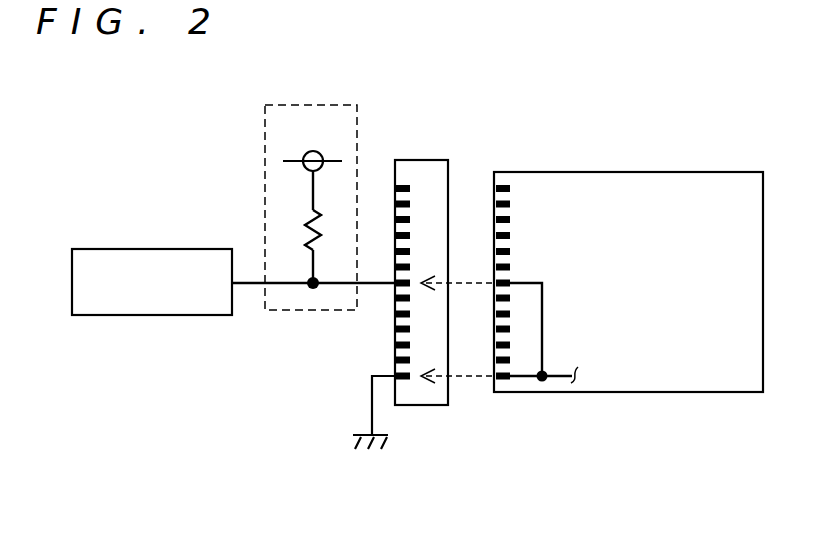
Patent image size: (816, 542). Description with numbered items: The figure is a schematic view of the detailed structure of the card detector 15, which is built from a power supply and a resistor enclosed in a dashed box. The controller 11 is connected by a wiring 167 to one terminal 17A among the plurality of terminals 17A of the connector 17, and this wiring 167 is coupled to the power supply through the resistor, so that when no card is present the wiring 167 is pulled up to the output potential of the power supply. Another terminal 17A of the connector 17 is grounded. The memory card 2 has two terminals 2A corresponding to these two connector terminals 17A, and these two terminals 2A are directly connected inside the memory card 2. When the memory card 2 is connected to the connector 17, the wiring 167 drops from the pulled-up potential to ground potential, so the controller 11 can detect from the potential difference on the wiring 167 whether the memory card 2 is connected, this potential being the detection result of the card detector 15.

The memory card 2 is at (623, 252).
The terminal of memory card 2A is at (486, 182).
The controller 11 is at (153, 249).
The card detector 15 is at (313, 104).
The connector 17 is at (426, 242).
The terminal of connector 17A is at (404, 185).
The wiring 167 is at (283, 286).